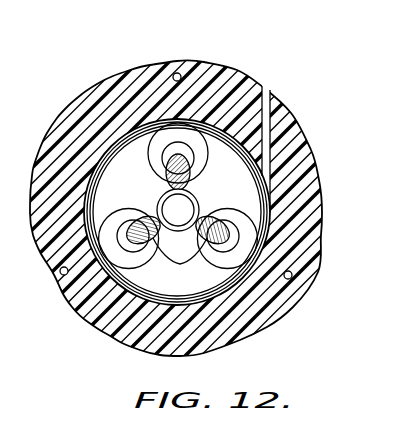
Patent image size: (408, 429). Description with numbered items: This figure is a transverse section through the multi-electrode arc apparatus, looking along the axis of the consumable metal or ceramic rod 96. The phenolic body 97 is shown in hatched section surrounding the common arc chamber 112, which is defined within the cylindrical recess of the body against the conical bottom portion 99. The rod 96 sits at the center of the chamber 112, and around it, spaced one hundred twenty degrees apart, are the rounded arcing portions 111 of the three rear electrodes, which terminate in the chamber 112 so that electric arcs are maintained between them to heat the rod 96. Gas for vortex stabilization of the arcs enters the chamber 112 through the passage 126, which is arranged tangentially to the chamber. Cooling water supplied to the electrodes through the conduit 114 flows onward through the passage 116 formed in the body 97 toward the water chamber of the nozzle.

The phenolic body 97 is at (312, 156).
The passage 126 is at (271, 97).
The passage 116 is at (177, 73).
The conical bottom portion 99 is at (157, 206).
The common arc chamber 112 is at (178, 196).
The rounded arcing portions 111 is at (178, 224).
The consumable metal or ceramic rod 96 is at (199, 202).
The conduit 114 is at (19, 406).